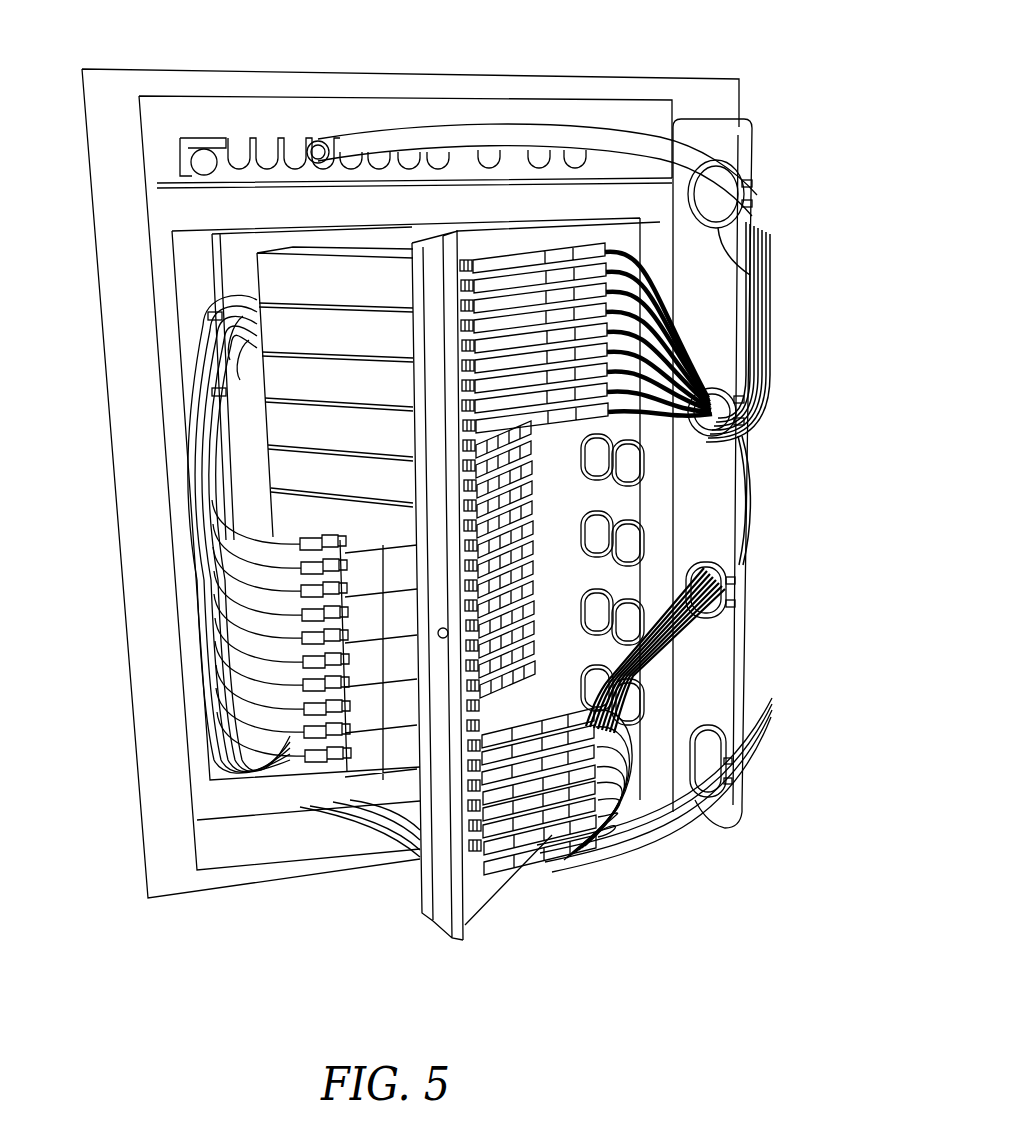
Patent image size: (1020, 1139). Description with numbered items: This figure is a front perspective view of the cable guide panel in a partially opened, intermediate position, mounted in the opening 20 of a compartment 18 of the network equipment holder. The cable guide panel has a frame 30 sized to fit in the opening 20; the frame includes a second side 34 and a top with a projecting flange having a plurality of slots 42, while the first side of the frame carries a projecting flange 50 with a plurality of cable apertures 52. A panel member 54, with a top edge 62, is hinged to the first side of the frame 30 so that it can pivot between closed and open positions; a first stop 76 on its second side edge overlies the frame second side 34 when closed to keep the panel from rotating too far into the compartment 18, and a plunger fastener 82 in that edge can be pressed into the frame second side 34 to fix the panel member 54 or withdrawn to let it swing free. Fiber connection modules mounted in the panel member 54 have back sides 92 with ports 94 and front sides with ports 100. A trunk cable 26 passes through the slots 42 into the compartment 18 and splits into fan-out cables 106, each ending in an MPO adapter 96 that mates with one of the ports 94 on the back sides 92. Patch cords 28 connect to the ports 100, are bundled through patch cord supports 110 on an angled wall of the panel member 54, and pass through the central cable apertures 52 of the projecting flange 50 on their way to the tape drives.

The compartment 18 is at (210, 857).
The opening 20 is at (263, 863).
The trunk cable 26 is at (608, 147).
The patch cord 28 is at (770, 400).
The frame 30 is at (222, 790).
The second side 34 is at (440, 900).
The slots 42 is at (292, 147).
The projecting flange 50 is at (727, 545).
The cable apertures 52 is at (745, 273).
The panel member 54 is at (532, 845).
The top edge 62 is at (462, 243).
The first stop 76 is at (458, 888).
The plunger fastener 82 is at (443, 640).
The back sides 92 is at (233, 383).
The ports 94 is at (233, 700).
The MPO adapters 96 is at (220, 575).
The ports 100 is at (498, 847).
The fan-out cables 106 is at (223, 443).
The patch cord supports 110 is at (687, 642).